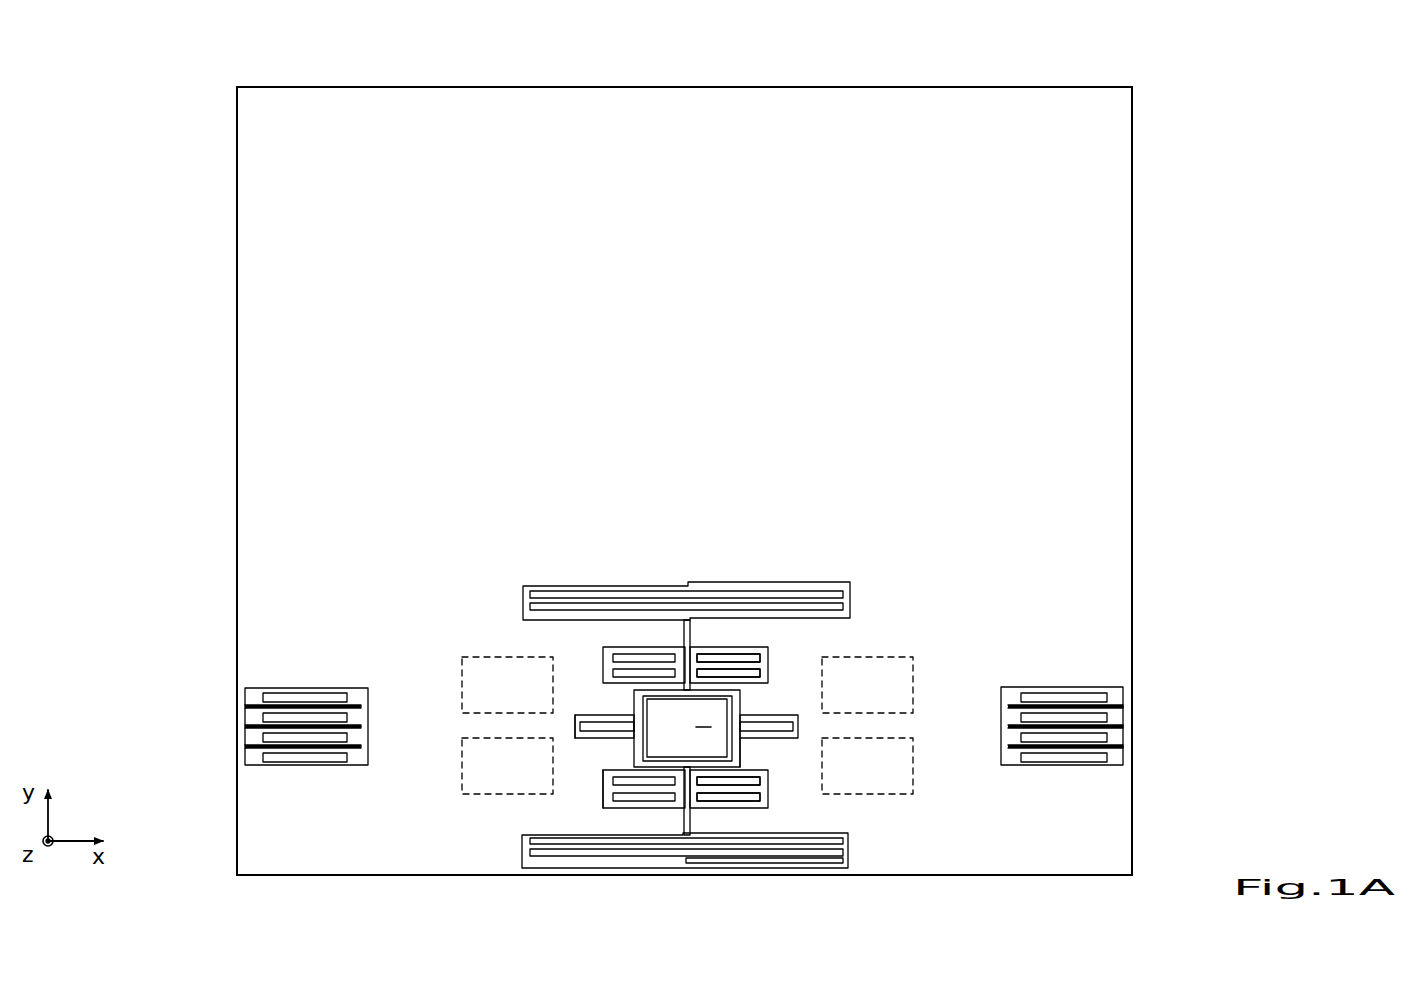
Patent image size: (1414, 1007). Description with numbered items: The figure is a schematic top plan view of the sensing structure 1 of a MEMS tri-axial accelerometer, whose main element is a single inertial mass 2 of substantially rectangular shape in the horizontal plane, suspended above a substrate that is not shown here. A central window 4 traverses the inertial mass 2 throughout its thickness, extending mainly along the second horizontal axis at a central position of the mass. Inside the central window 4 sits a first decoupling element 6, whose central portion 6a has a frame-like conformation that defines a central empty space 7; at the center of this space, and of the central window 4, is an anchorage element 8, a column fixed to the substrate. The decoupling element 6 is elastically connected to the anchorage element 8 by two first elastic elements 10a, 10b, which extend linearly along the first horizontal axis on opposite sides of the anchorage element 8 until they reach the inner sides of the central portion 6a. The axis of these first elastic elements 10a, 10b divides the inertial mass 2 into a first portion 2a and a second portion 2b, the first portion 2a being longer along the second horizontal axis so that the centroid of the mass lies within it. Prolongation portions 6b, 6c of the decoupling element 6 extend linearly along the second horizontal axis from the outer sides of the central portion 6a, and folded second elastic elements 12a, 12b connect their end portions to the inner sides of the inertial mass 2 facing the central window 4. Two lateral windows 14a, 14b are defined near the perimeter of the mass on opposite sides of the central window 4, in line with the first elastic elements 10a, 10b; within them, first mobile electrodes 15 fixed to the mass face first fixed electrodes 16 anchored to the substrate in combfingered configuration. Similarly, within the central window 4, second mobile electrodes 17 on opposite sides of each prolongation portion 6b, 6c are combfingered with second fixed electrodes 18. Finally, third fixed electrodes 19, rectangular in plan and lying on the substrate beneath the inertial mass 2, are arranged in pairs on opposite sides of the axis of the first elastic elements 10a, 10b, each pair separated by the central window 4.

The sensing structure 1 is at (1160, 90).
The inertial mass 2 is at (1106, 157).
The first portion 2a is at (1112, 432).
The second portion 2b is at (962, 745).
The central window 4 is at (575, 735).
The first decoupling element 6 is at (775, 715).
The central portion 6a is at (733, 748).
The prolongation portion 6b is at (686, 638).
The prolongation portion 6c is at (683, 837).
The central empty space 7 is at (647, 698).
The anchorage element 8 is at (703, 715).
The first elastic element 10a is at (580, 728).
The first elastic element 10b is at (793, 727).
The second elastic element 12a is at (782, 593).
The second elastic element 12b is at (820, 855).
The lateral window 14a is at (284, 694).
The lateral window 14b is at (1086, 712).
The first mobile electrodes 15 is at (258, 726).
The first fixed electrodes 16 is at (322, 718).
The second mobile electrodes 17 is at (605, 664).
The second fixed electrodes 18 is at (702, 672).
The third fixed electrodes 19 is at (483, 657).